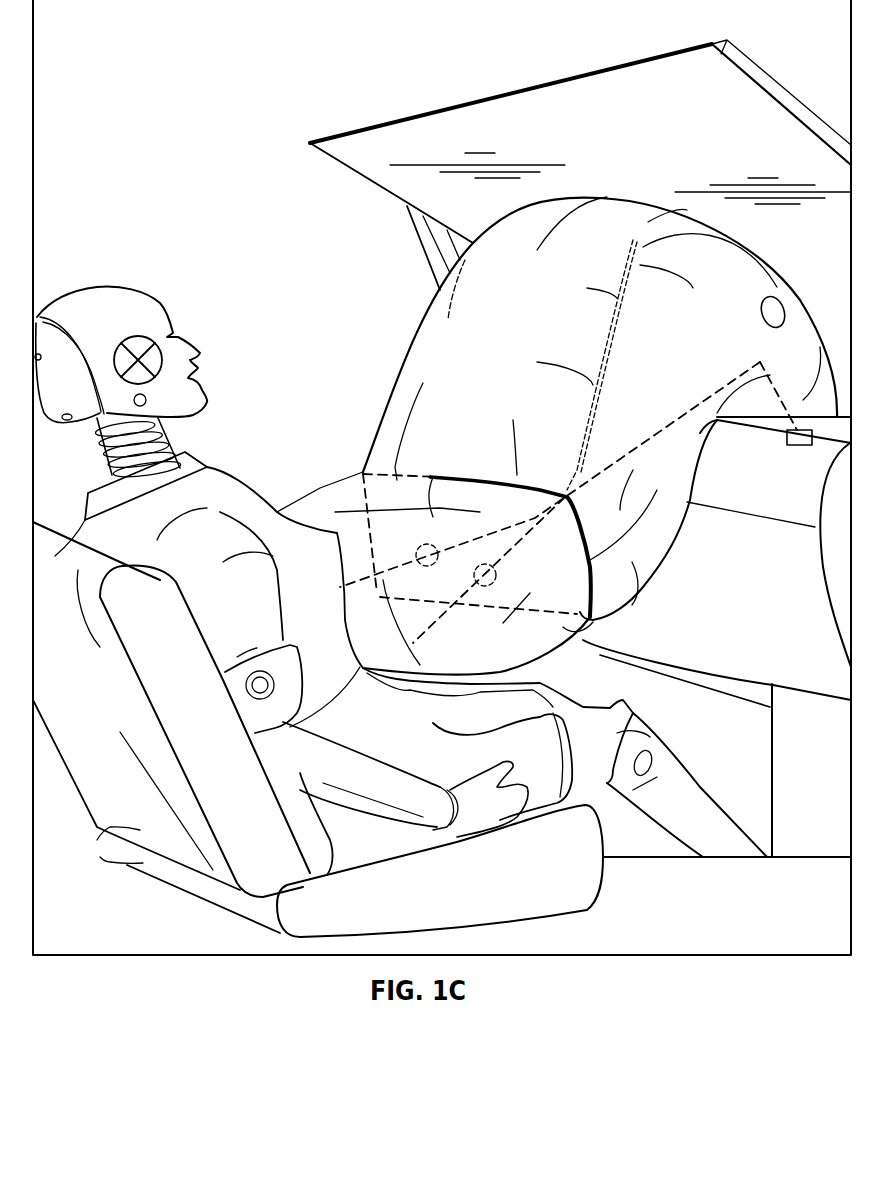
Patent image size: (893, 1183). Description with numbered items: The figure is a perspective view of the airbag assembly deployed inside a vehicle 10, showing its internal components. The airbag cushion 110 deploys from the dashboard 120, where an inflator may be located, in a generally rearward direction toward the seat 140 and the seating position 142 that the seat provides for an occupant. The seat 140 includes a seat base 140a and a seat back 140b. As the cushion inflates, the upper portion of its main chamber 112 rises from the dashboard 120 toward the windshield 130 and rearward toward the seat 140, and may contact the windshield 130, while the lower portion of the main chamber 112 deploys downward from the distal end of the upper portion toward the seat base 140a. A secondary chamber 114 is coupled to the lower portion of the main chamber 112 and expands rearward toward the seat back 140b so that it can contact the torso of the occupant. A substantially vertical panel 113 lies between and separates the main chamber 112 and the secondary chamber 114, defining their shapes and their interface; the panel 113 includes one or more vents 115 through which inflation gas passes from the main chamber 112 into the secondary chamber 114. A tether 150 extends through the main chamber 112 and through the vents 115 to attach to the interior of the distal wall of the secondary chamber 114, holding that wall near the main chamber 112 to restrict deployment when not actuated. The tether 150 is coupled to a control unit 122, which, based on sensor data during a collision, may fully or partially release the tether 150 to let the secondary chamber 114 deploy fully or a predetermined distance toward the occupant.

The vehicle 10 is at (205, 180).
The airbag cushion 110 is at (384, 306).
The main chamber 112 is at (545, 335).
The panel 113 is at (585, 635).
The secondary chamber 114 is at (497, 652).
The vents 115 is at (484, 546).
The dashboard 120 is at (792, 600).
The control unit 122 is at (797, 446).
The windshield 130 is at (562, 107).
The seat 140 is at (140, 832).
The seat base 140a is at (474, 887).
The seat back 140b is at (247, 762).
The seating position 142 is at (270, 461).
The tether 150 is at (720, 387).